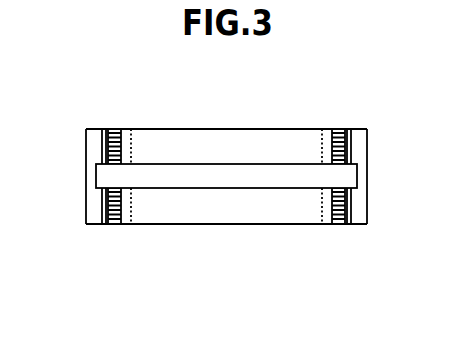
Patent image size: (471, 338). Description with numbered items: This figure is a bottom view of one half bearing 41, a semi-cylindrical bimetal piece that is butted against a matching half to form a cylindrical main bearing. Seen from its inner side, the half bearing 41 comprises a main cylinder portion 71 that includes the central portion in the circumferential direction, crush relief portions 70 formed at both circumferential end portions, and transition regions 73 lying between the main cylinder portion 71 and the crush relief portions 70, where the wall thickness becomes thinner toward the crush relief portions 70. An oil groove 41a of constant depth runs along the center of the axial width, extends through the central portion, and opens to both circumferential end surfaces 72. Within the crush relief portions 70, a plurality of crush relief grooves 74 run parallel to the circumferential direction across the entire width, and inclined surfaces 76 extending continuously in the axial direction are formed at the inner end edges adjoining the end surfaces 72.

The half bearing 41 is at (346, 90).
The oil groove 41a is at (207, 172).
The crush relief portion 70 is at (115, 237).
The main cylinder portion 71 is at (220, 236).
The end surface 72 is at (96, 222).
The transition region 73 is at (127, 120).
The crush relief groove 74 is at (98, 150).
The inclined surface 76 is at (103, 237).